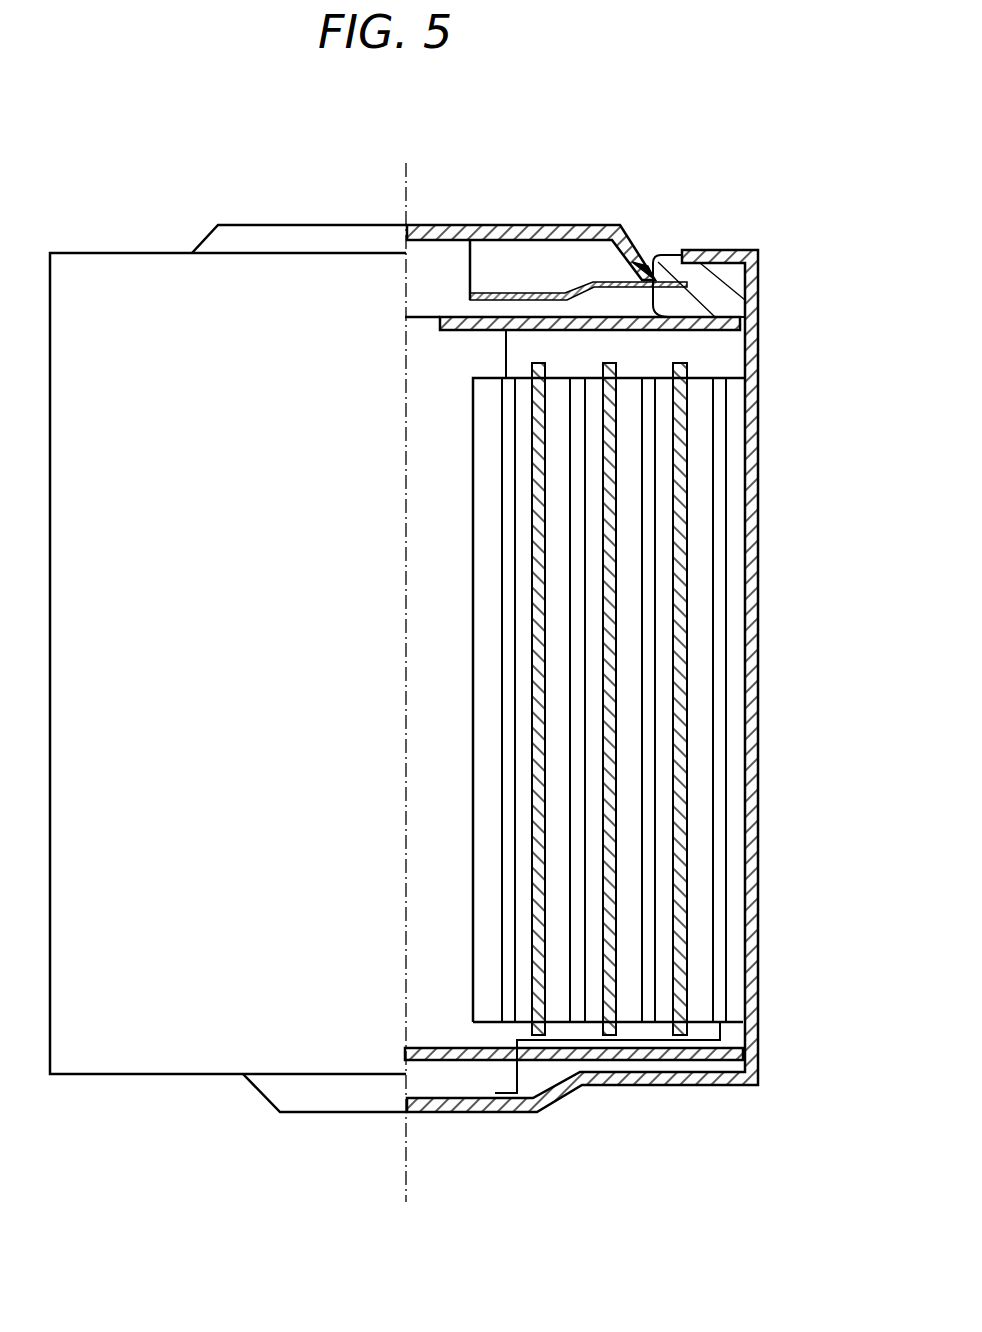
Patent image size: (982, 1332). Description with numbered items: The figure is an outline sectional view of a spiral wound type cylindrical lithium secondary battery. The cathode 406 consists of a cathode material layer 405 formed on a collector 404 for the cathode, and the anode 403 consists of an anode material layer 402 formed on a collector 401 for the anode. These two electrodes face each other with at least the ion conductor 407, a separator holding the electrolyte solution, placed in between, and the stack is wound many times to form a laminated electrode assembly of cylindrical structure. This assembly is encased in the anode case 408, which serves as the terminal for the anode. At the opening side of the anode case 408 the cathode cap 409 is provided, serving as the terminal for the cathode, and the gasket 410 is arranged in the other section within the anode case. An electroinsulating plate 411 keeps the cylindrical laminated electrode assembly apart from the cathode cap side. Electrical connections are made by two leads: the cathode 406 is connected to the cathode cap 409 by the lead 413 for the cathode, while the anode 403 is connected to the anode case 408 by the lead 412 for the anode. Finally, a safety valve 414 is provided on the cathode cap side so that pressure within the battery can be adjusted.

The collector for the anode 401 is at (717, 718).
The anode material layer 402 is at (702, 778).
The anode 403 is at (598, 375).
The collector for the cathode 404 is at (647, 893).
The cathode material layer 405 is at (663, 502).
The cathode 406 is at (673, 375).
The ion conductor 407 is at (678, 580).
The anode case 408 is at (420, 1112).
The cathode cap 409 is at (513, 230).
The gasket 410 is at (722, 253).
The electroinsulating plate 411 is at (737, 323).
The lead for the anode 412 is at (520, 1080).
The lead for the cathode 413 is at (505, 352).
The safety valve 414 is at (427, 245).